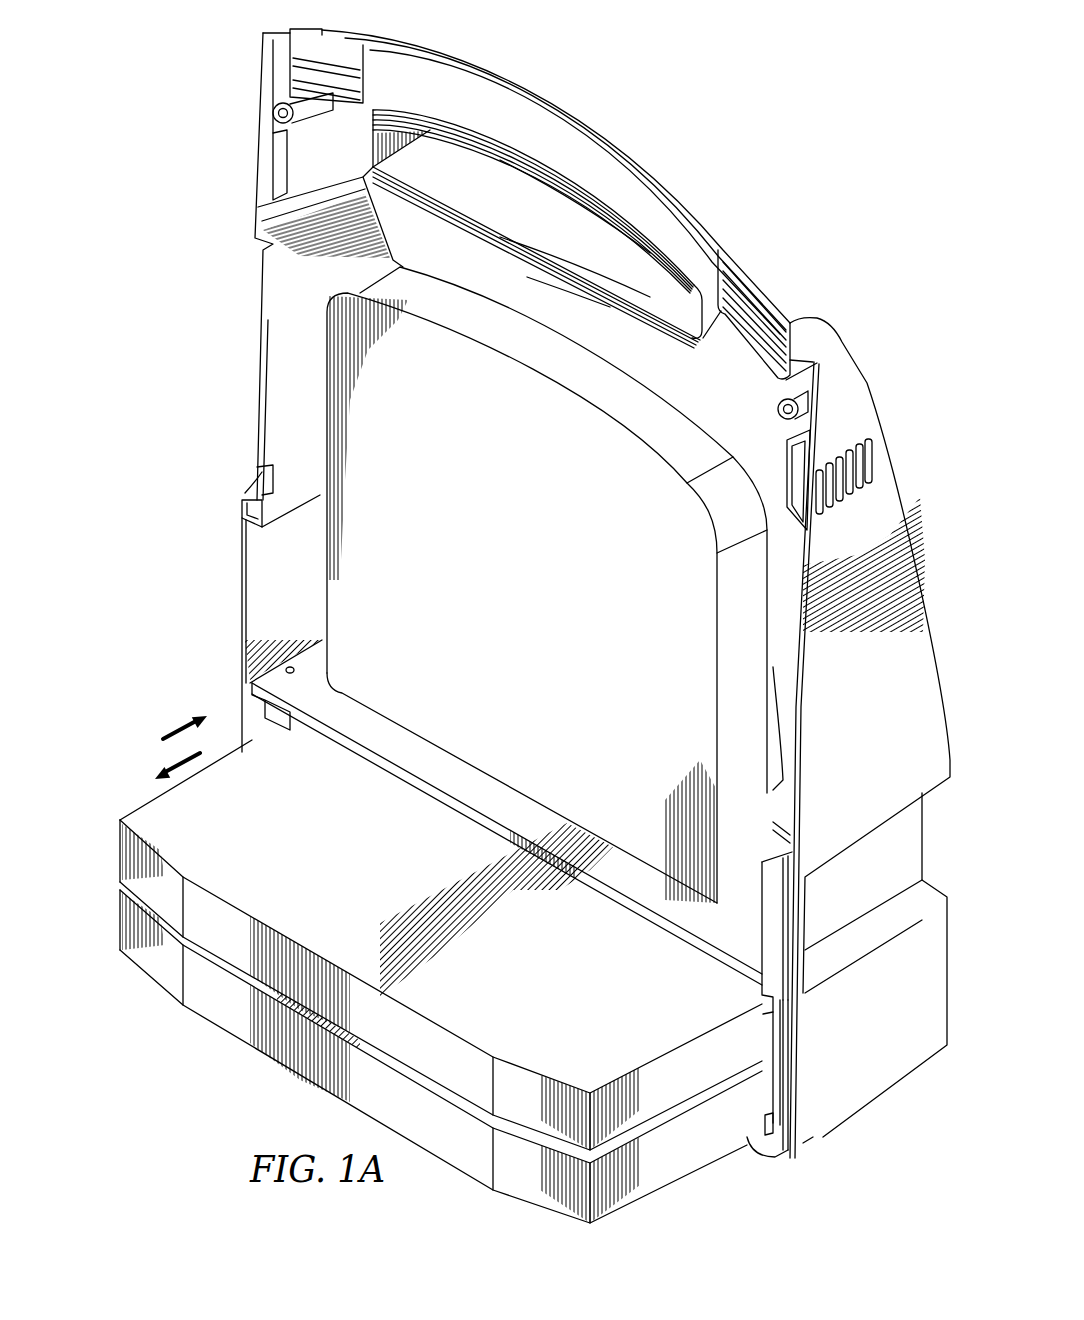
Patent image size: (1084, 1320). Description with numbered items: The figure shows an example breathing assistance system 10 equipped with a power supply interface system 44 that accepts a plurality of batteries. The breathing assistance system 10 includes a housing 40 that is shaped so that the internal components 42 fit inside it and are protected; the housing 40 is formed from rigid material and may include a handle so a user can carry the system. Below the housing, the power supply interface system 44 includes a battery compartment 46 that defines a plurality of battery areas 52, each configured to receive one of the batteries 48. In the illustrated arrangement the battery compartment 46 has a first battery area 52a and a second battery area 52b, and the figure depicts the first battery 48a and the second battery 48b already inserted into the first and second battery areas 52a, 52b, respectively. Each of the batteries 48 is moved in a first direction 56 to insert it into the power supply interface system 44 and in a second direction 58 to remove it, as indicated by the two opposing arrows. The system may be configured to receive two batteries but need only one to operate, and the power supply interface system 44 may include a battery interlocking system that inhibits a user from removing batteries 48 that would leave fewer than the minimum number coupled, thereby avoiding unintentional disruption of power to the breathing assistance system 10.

The breathing assistance system 10 is at (724, 153).
The housing 40 is at (606, 134).
The internal components 42 is at (314, 405).
The power supply interface system 44 is at (400, 948).
The battery compartment 46 is at (364, 760).
The batteries 48 is at (400, 981).
The first battery 48a is at (119, 832).
The second battery 48b is at (426, 1056).
The battery areas 52 is at (759, 1025).
The first battery area 52a is at (751, 1027).
The second battery area 52b is at (756, 1100).
The first direction 56 is at (176, 723).
The second direction 58 is at (186, 762).